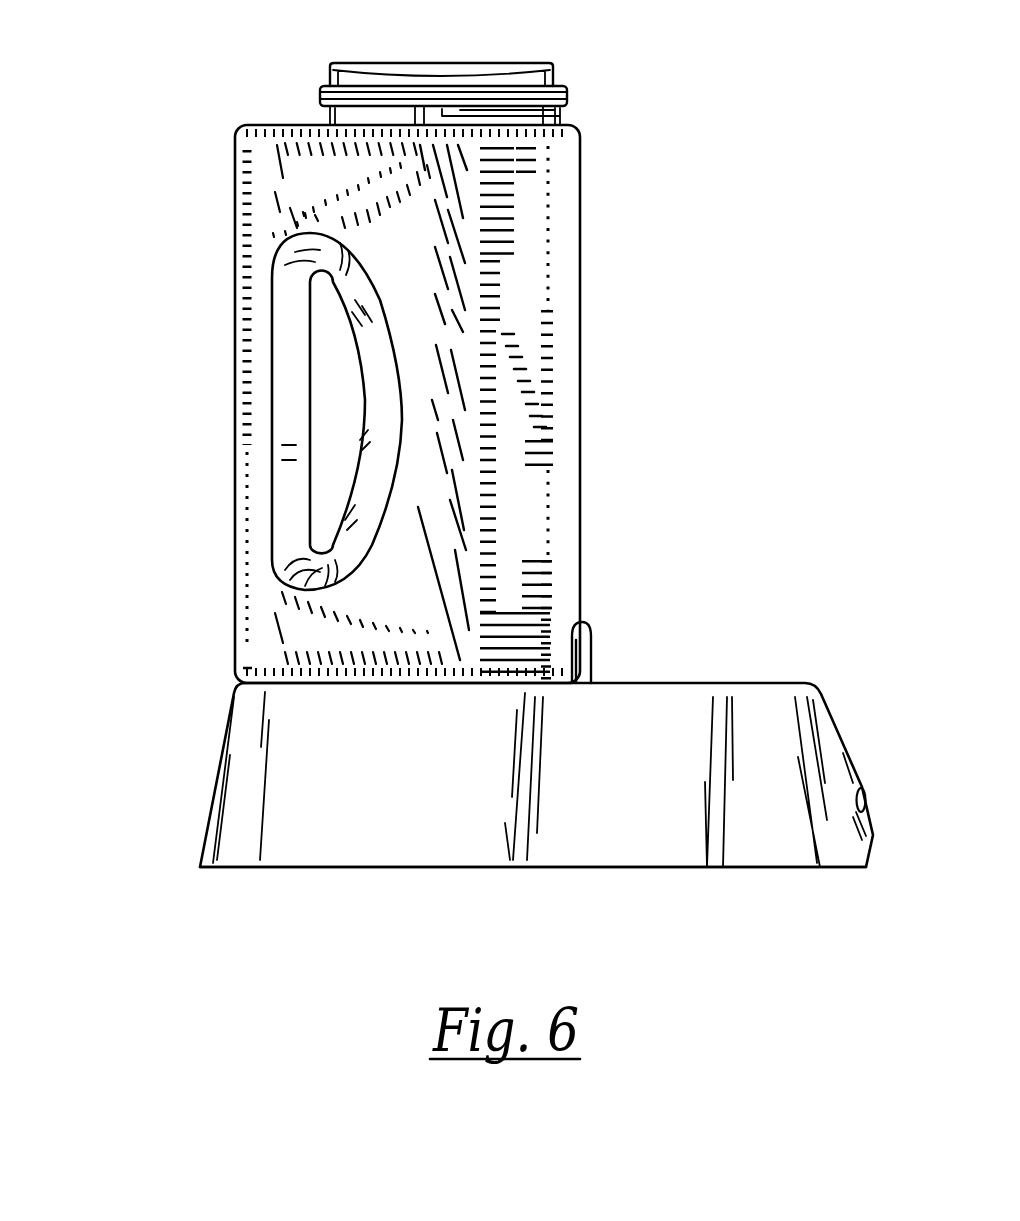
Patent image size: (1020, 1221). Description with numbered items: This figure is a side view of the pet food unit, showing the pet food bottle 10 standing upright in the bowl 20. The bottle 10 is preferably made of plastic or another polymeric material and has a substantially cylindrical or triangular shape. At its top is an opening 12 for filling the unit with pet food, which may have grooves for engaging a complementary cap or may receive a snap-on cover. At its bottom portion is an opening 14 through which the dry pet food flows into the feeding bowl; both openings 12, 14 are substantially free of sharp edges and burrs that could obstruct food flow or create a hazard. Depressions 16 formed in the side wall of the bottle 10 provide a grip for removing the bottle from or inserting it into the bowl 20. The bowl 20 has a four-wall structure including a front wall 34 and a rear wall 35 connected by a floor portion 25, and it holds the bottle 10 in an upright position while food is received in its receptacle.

The pet food bottle 10 is at (407, 404).
The top opening 12 is at (465, 62).
The bottom opening 14 is at (592, 657).
The depressions 16 is at (330, 430).
The bowl 20 is at (182, 700).
The floor portion 25 is at (512, 868).
The front wall 34 is at (862, 786).
The rear wall 35 is at (207, 807).